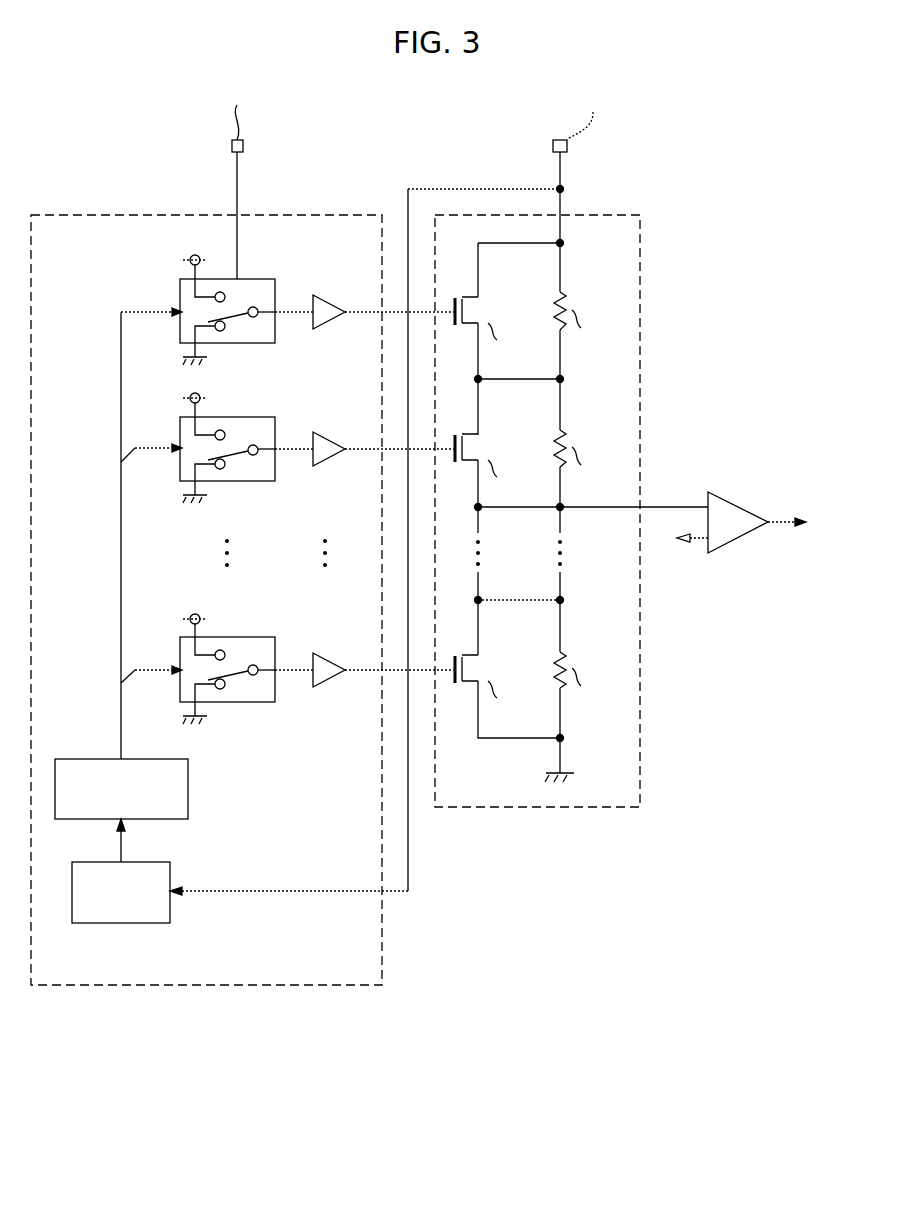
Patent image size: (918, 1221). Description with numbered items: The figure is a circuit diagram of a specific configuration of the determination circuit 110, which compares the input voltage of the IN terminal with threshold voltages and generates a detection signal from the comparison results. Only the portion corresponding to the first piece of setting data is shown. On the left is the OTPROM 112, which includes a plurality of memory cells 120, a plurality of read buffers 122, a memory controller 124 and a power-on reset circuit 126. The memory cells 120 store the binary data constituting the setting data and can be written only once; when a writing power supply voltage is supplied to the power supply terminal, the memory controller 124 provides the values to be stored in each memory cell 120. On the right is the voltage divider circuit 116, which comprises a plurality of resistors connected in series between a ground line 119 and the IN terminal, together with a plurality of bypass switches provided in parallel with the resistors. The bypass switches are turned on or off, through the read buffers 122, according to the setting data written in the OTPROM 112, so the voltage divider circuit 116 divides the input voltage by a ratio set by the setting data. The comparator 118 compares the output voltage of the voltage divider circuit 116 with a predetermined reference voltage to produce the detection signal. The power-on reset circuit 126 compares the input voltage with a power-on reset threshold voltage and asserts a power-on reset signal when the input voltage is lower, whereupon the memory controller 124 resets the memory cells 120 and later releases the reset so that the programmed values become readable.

The determination circuit 110 is at (453, 1064).
The OTPROM 112 is at (297, 215).
The voltage divider circuit 116 is at (518, 808).
The comparator 118 is at (739, 548).
The ground line 119 is at (536, 778).
The memory cell 120 is at (250, 273).
The read buffer 122 is at (350, 288).
The memory controller 124 is at (189, 785).
The power-on reset circuit 126 is at (128, 923).